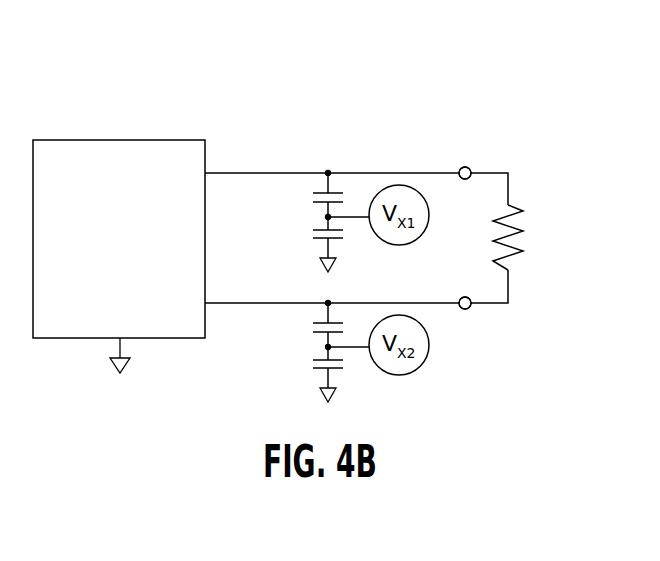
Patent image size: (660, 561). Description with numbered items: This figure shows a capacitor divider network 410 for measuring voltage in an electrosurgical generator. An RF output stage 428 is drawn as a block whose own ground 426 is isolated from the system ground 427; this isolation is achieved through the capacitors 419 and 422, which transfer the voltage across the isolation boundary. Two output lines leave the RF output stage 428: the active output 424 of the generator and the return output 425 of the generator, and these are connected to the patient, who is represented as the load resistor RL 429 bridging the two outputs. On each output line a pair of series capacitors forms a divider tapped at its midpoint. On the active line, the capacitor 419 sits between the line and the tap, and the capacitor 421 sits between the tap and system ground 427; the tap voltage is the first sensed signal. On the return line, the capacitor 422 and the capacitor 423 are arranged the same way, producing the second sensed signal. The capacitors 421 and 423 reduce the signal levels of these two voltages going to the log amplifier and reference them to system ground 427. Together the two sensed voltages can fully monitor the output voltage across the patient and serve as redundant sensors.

The capacitor divider network 410 is at (537, 95).
The RF output stage 428 is at (120, 139).
The ground 426 is at (108, 365).
The active output 424 is at (466, 166).
The return output 425 is at (466, 310).
The patient load RL 429 is at (535, 262).
The capacitor 419 is at (310, 200).
The capacitor 421 is at (310, 235).
The capacitor 422 is at (310, 330).
The capacitor 423 is at (310, 365).
The system ground 427 is at (310, 267).